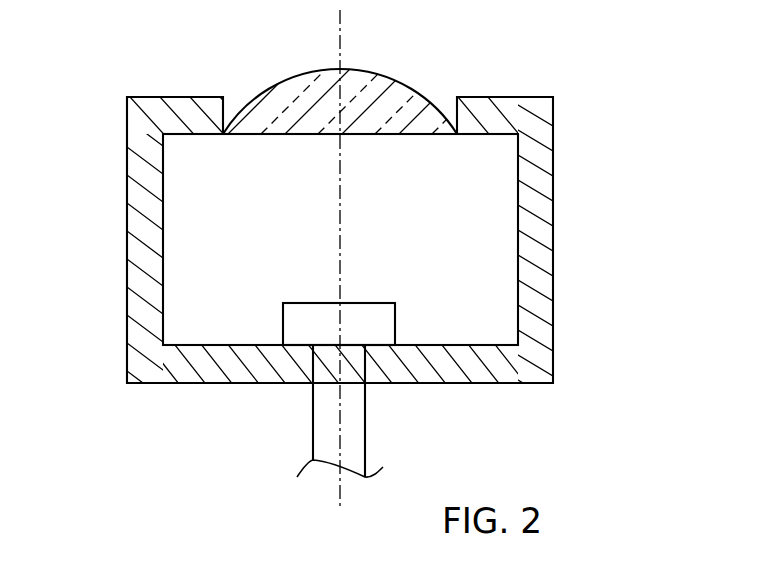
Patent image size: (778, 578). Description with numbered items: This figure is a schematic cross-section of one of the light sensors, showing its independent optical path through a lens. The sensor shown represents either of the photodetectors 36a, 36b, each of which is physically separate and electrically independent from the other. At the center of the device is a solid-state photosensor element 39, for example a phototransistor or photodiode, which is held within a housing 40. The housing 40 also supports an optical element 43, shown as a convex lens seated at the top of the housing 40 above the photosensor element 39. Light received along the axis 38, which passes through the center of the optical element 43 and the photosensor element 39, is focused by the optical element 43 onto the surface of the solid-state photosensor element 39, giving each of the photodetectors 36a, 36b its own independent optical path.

The photodetector 36a is at (389, 289).
The photodetector 36b is at (389, 289).
The axis 38 is at (344, 40).
The solid-state photosensor element 39 is at (364, 303).
The housing 40 is at (127, 234).
The optical element 43 is at (379, 78).